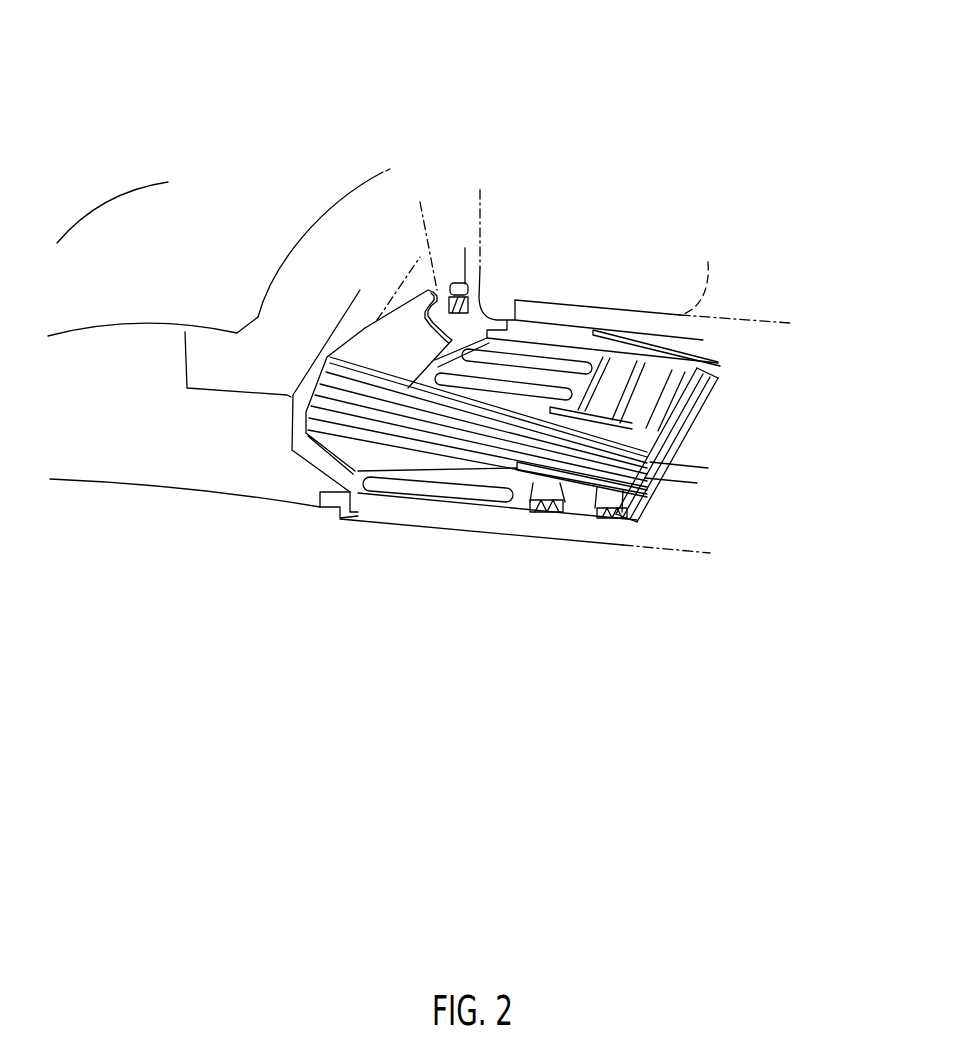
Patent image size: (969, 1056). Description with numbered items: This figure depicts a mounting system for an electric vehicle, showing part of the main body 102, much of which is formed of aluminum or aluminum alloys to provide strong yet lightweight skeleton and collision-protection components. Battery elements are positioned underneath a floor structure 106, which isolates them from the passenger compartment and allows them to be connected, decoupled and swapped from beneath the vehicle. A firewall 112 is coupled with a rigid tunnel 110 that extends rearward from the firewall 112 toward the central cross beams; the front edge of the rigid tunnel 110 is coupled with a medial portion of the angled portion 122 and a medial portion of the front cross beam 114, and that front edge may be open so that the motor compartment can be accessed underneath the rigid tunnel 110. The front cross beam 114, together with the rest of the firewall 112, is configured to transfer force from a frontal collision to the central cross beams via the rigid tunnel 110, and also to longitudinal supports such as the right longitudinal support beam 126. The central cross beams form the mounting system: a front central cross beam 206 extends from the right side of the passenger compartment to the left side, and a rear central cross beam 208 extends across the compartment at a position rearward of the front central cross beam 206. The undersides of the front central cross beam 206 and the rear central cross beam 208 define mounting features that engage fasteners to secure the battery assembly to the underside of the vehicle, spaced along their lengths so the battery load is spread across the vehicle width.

The main body 102 is at (379, 480).
The floor structure 106 is at (550, 345).
The rigid tunnel 110 is at (358, 453).
The firewall 112 is at (328, 290).
The front cross beam 114 is at (368, 305).
The angled portion 122 is at (305, 458).
The right longitudinal support beam 126 is at (653, 310).
The front central cross beam 206 is at (618, 378).
The rear central cross beam 208 is at (686, 390).